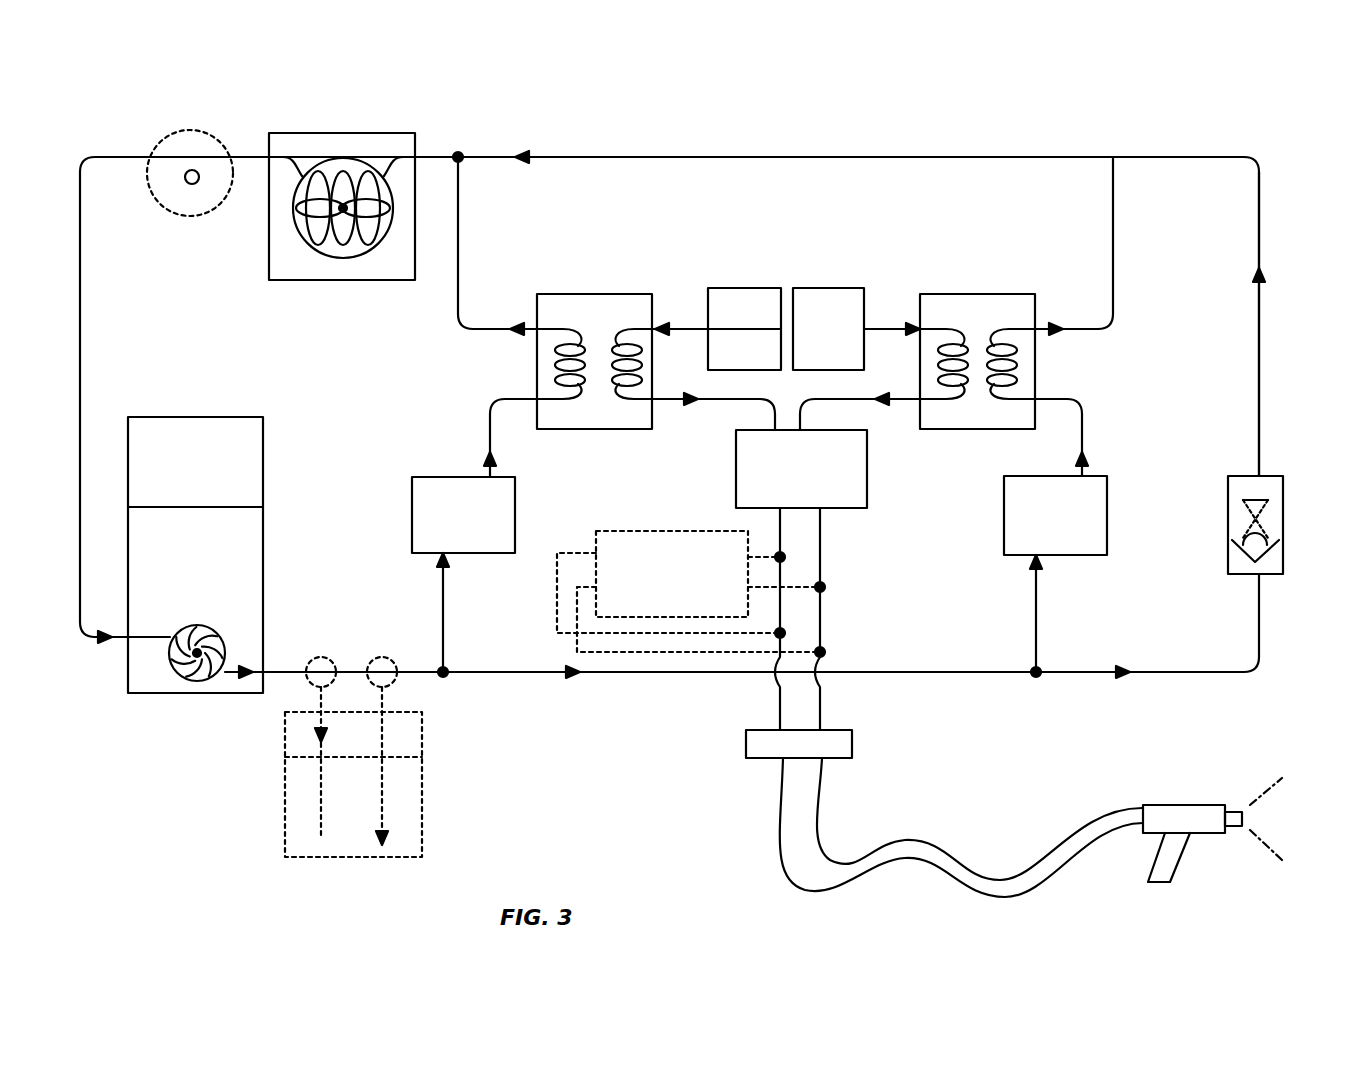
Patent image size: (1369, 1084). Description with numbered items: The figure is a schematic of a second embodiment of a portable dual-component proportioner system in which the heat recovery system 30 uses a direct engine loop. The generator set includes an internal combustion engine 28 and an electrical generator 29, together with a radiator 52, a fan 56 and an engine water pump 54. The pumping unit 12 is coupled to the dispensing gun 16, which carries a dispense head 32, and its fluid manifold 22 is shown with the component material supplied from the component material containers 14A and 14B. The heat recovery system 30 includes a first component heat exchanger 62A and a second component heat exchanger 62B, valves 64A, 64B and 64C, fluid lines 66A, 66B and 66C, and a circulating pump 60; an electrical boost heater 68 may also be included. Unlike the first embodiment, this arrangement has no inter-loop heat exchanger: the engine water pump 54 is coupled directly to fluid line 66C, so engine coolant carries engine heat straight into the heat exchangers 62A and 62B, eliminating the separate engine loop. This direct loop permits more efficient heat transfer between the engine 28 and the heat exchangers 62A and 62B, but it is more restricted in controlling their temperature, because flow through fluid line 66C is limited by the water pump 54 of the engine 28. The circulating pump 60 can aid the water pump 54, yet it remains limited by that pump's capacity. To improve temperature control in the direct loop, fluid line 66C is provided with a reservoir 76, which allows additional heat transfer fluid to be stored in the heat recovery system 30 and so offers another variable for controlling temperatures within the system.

The pumping unit 12 is at (885, 520).
The component material container 14A is at (760, 300).
The component material container 14B is at (843, 300).
The dispensing gun 16 is at (1220, 855).
The fluid manifold 22 is at (850, 745).
The internal combustion engine 28 is at (198, 580).
The electrical generator 29 is at (252, 443).
The heat recovery system 30 is at (445, 715).
The dispense head 32 is at (1235, 805).
The radiator 52 is at (405, 148).
The water pump 54 is at (228, 643).
The fan 56 is at (322, 165).
The circulating pump 60 is at (215, 137).
The first component heat exchanger 62A is at (617, 303).
The second component heat exchanger 62B is at (1005, 303).
The valve 64A is at (463, 515).
The valve 64B is at (1055, 515).
The valve 64C is at (1275, 493).
The fluid line 66A is at (443, 650).
The fluid line 66B is at (1067, 613).
The fluid line 66C is at (1262, 365).
The electrical boost heater 68 is at (610, 545).
The reservoir 76 is at (295, 832).